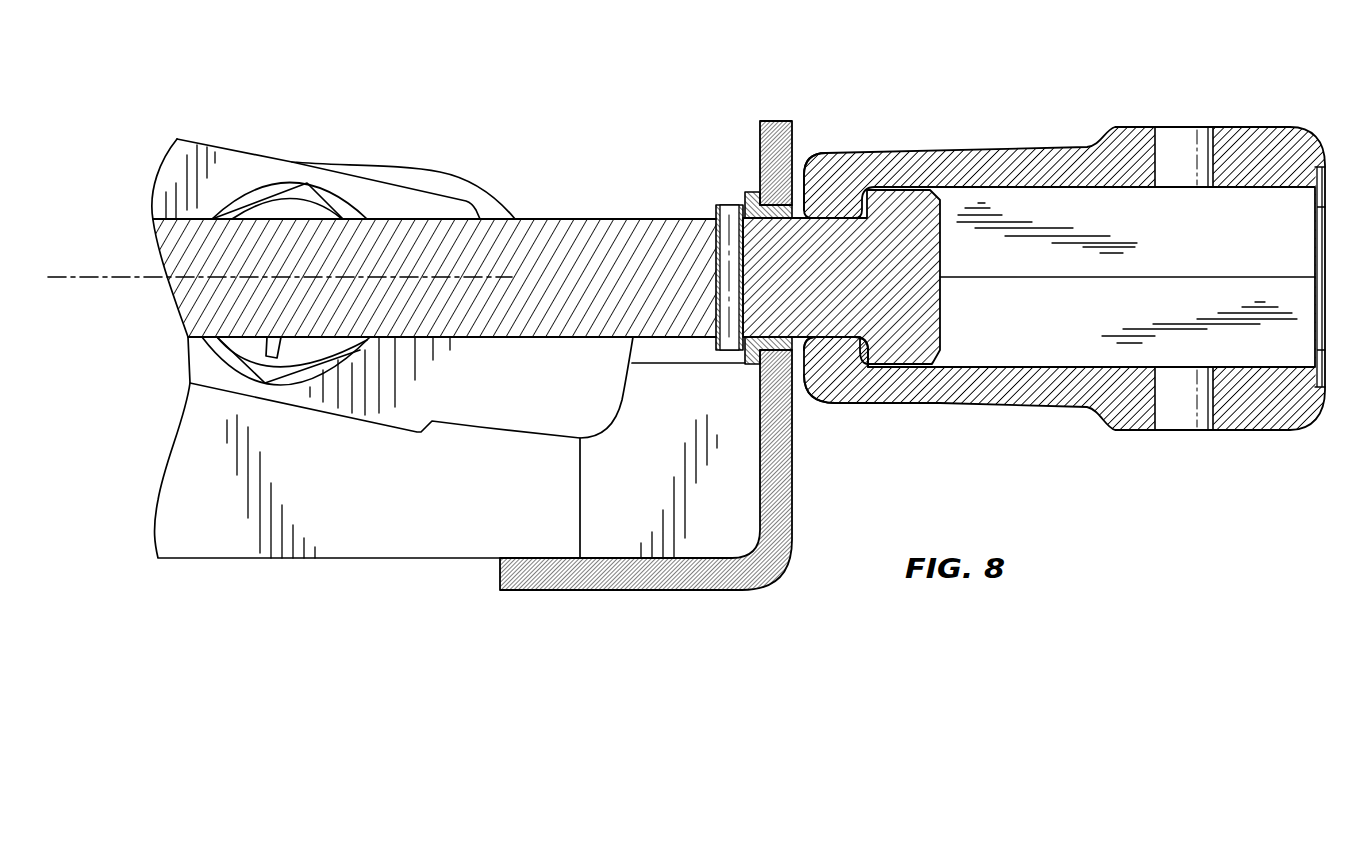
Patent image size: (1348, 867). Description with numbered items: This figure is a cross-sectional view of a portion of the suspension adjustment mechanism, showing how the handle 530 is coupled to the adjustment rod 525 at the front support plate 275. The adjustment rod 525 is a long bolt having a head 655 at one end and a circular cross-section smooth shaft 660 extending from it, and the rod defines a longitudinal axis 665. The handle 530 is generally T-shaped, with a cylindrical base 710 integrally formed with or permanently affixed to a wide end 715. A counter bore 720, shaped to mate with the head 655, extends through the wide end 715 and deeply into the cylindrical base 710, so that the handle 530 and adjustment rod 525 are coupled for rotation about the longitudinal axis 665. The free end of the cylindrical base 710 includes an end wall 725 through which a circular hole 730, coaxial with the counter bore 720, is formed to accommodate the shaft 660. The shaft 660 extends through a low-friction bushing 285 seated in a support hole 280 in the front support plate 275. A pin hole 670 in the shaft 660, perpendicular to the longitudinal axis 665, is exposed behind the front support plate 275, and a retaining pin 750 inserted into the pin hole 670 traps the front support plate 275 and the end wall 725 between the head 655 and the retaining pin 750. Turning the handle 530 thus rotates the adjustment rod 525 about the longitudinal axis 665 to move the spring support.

The adjustment rod 525 is at (546, 196).
The handle 530 is at (1034, 249).
The head 655 is at (902, 220).
The shaft 660 is at (403, 240).
The longitudinal axis 665 is at (123, 275).
The pin hole 670 is at (720, 352).
The front support plate 275 is at (778, 120).
The support hole 280 is at (822, 187).
The low-friction bushing 285 is at (757, 192).
The retaining pin 750 is at (713, 212).
The cylindrical base 710 is at (997, 152).
The wide end 715 is at (1258, 142).
The counter bore 720 is at (1025, 363).
The end wall 725 is at (837, 373).
The circular hole 730 is at (838, 370).